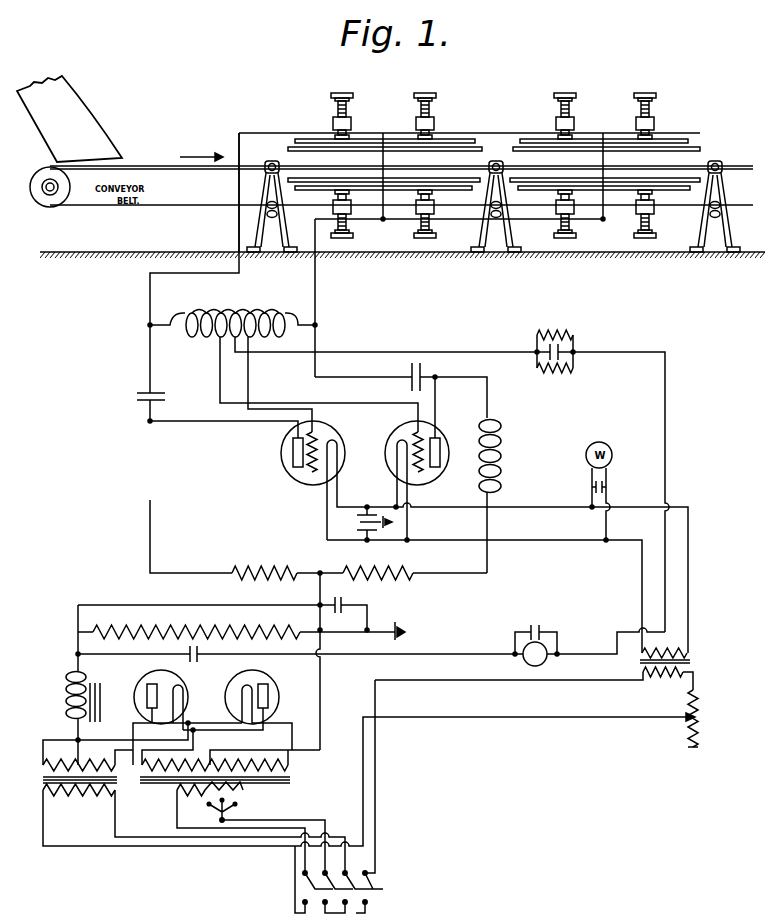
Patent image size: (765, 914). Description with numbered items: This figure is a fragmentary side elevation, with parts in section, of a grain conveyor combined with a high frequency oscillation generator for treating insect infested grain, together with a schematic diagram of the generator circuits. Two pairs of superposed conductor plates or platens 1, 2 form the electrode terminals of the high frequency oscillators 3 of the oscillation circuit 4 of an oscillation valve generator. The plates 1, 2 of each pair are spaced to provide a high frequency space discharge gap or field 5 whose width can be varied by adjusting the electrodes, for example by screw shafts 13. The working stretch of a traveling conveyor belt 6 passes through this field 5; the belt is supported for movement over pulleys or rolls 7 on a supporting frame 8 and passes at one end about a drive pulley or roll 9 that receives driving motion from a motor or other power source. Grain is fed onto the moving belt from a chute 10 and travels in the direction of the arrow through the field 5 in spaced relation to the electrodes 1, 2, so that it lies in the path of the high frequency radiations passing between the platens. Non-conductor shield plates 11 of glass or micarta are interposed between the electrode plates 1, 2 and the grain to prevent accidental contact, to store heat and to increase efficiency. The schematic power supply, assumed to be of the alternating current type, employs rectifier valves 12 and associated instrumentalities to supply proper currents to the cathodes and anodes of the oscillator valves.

The conductor plate 1 is at (585, 142).
The conductor plate 2 is at (618, 192).
The high frequency oscillators 3 is at (365, 446).
The oscillation circuit 4 is at (232, 310).
The space discharge gap or field 5 is at (608, 176).
The conveyor belt 6 is at (249, 164).
The pulleys or rolls 7 is at (716, 162).
The supporting frame 8 is at (727, 221).
The drive pulley or roll 9 is at (47, 207).
The chute 10 is at (69, 119).
The non-conductor shield plates 11 is at (660, 178).
The rectifier valves 12 is at (276, 687).
The screw shafts 13 is at (636, 227).